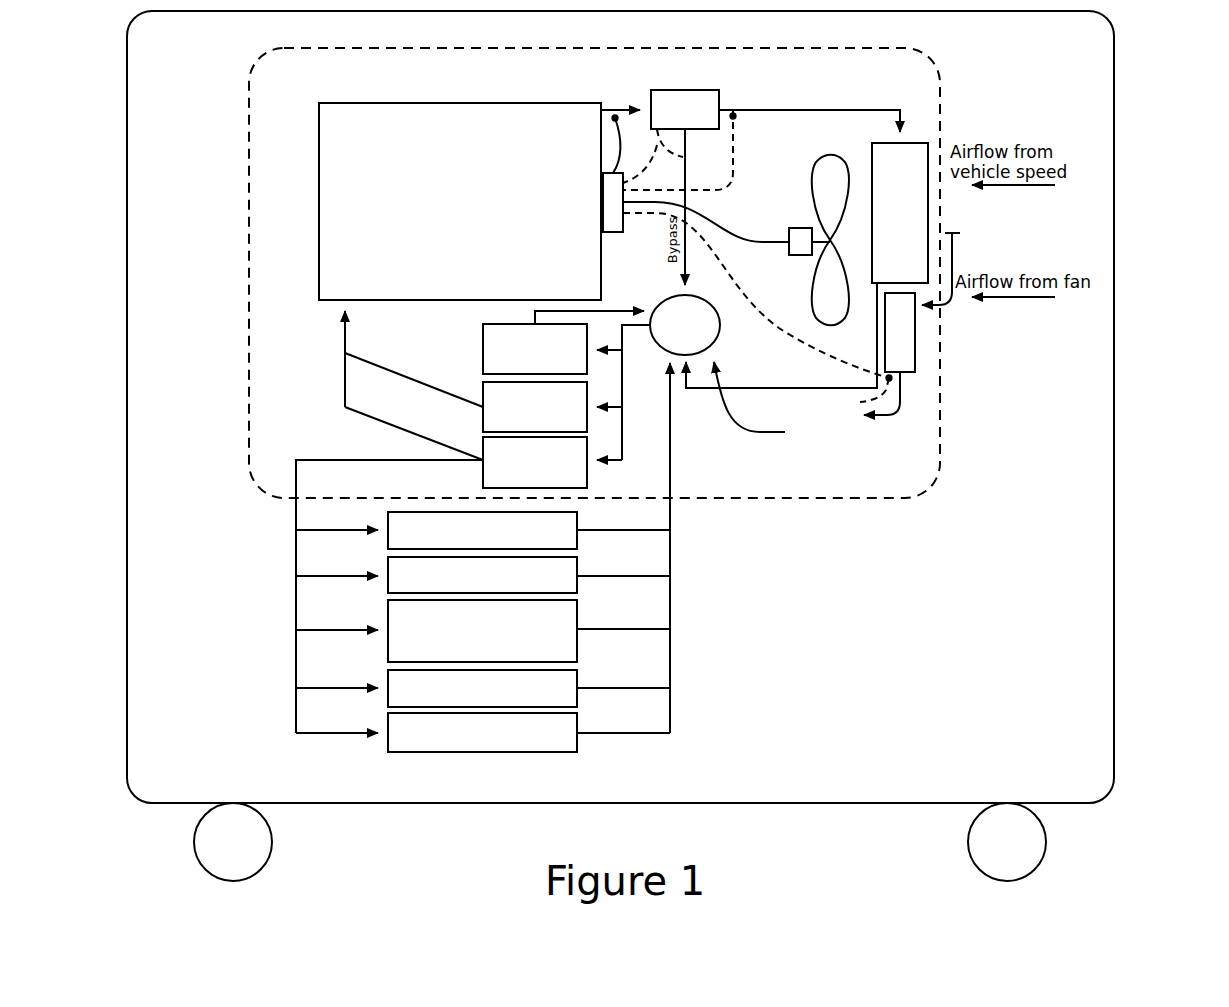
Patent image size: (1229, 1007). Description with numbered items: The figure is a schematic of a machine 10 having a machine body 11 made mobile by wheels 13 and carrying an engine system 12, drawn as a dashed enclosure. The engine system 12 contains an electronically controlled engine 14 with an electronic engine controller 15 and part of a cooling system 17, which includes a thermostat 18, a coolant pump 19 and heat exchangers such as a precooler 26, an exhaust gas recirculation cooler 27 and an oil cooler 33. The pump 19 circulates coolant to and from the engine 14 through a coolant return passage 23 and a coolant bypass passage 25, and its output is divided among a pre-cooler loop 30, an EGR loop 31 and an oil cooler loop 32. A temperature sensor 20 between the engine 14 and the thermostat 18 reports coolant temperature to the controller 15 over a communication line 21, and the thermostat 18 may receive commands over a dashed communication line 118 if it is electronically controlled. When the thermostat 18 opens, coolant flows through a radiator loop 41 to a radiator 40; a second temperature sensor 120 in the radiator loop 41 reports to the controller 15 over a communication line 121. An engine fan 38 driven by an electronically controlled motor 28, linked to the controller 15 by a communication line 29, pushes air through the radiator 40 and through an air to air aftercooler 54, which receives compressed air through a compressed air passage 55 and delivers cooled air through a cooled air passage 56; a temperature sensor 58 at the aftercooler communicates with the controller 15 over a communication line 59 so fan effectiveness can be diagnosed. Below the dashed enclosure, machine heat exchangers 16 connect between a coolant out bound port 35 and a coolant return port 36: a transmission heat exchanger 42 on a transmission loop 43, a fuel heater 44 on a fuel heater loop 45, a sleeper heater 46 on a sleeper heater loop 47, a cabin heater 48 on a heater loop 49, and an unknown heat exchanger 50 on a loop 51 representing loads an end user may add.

The machine 10 is at (1147, 150).
The machine body 11 is at (1114, 430).
The engine system 12 is at (247, 112).
The wheels 13 is at (272, 840).
The electronically controlled engine 14 is at (319, 206).
The electronic engine controller 15 is at (603, 205).
The machine heat exchangers 16 is at (708, 628).
The cooling system 17 is at (765, 403).
The thermostat 18 is at (715, 90).
The coolant pump 19 is at (705, 300).
The temperature sensor 20 is at (612, 119).
The communication line 21 is at (617, 152).
The coolant return passage 23 is at (606, 103).
The coolant bypass passage 25 is at (690, 203).
The precooler 26 is at (483, 344).
The exhaust gas recirculation (EGR) cooler 27 is at (483, 410).
The electronically controlled motor 28 is at (800, 255).
The communication line 29 is at (795, 228).
The pre-cooler loop 30 is at (640, 311).
The EGR loop 31 is at (355, 370).
The oil cooler loop 32 is at (355, 425).
The oil cooler 33 is at (483, 474).
The coolant out bound port 35 is at (296, 500).
The coolant return port 36 is at (672, 498).
The engine fan 38 is at (820, 162).
The radiator 40 is at (928, 213).
The radiator loop 41 is at (897, 108).
The transmission heat exchanger 42 is at (577, 545).
The transmission loop 43 is at (325, 530).
The fuel heater 44 is at (577, 589).
The fuel heater loop 45 is at (325, 576).
The sleeper heater 46 is at (577, 648).
The sleeper heater loop 47 is at (325, 630).
The cabin heater 48 is at (577, 702).
The heater loop 49 is at (325, 688).
The unknown heat exchanger 50 is at (577, 752).
The loop 51 is at (325, 733).
The air to air aftercooler 54 is at (915, 330).
The compressed air passage 55 is at (955, 240).
The cooled air passage 56 is at (905, 402).
The temperature sensor 58 is at (857, 396).
The communication line 59 is at (790, 330).
The communication line 118 is at (683, 157).
The second temperature sensor 120 is at (735, 118).
The communication line 121 is at (735, 152).